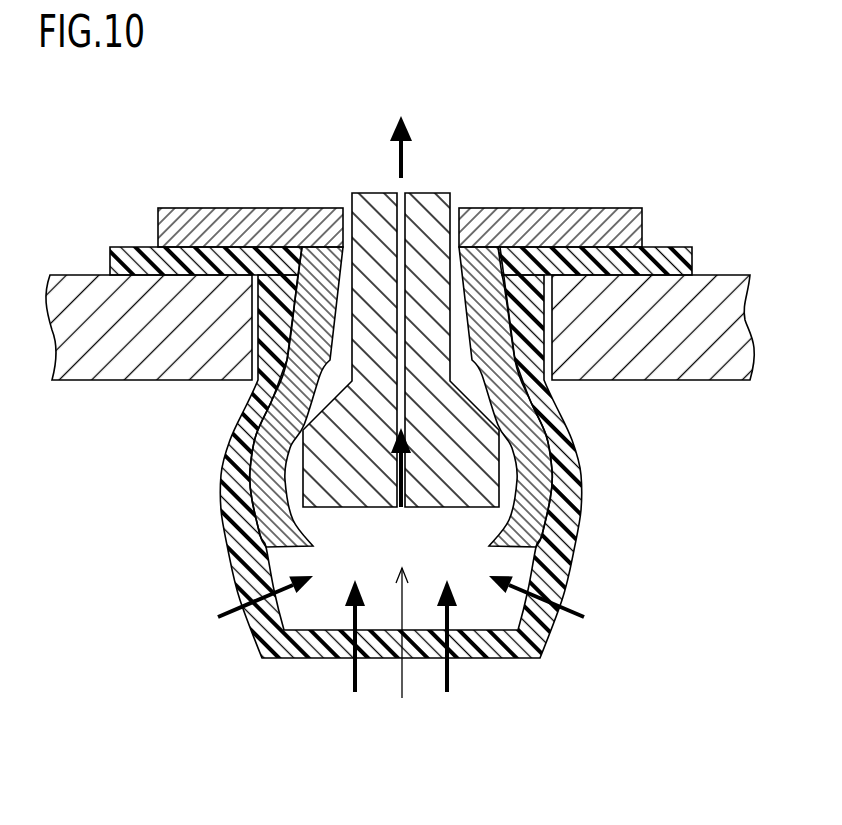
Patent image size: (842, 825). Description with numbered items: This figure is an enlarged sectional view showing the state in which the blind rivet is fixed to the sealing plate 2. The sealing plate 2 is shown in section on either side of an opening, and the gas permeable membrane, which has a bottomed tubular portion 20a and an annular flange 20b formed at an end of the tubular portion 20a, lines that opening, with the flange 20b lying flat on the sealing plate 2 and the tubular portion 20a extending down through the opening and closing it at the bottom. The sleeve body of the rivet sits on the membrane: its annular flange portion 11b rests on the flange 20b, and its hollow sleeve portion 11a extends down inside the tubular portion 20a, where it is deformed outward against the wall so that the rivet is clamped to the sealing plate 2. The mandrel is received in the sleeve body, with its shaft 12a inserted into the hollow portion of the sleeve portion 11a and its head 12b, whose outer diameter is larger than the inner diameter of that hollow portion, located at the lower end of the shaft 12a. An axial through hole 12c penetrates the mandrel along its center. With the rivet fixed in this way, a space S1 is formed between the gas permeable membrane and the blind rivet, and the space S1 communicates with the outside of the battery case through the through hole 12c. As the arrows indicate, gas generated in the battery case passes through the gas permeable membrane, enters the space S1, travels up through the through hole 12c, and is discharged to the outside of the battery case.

The sealing plate 2 is at (93, 383).
The sleeve portion 11a is at (557, 470).
The flange portion 11b is at (590, 208).
The shaft 12a is at (452, 207).
The head 12b is at (452, 508).
The through hole 12c is at (404, 193).
The tubular portion 20a is at (560, 577).
The flange 20b is at (668, 247).
The space S1 is at (405, 651).